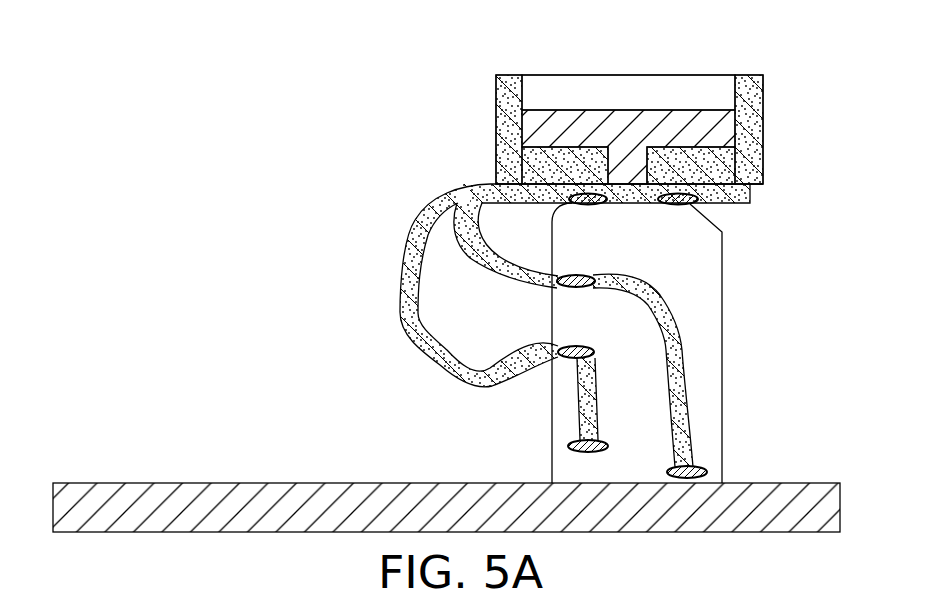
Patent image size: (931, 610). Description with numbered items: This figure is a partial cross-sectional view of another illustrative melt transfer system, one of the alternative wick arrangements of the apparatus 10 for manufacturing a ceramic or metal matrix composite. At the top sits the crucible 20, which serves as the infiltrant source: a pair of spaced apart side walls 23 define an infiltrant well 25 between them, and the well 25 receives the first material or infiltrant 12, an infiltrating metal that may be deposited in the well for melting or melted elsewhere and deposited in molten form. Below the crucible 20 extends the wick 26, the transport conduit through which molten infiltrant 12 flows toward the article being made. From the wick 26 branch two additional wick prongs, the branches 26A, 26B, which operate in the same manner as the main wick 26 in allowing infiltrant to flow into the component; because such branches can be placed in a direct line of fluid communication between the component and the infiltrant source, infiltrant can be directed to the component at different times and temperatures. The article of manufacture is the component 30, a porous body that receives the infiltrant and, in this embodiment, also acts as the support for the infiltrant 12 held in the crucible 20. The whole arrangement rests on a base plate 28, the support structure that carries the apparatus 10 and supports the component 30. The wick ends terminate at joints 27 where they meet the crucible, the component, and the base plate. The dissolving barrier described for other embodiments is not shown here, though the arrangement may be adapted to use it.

The apparatus 10 is at (151, 131).
The crucible 20 is at (458, 113).
The side walls 23 is at (512, 75).
The infiltrant well 25 is at (665, 90).
The infiltrant 12 is at (607, 110).
The wick 26 is at (740, 204).
The wick branch 26A is at (402, 293).
The wick branch 26B is at (487, 268).
The solder joints 27 is at (677, 208).
The component 30 is at (722, 328).
The base plate 28 is at (230, 483).